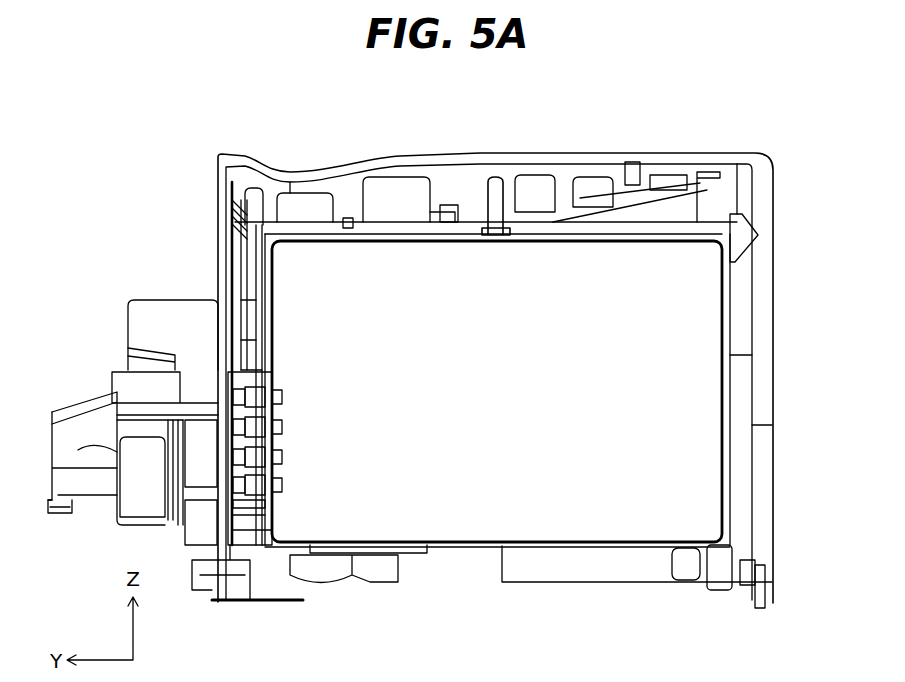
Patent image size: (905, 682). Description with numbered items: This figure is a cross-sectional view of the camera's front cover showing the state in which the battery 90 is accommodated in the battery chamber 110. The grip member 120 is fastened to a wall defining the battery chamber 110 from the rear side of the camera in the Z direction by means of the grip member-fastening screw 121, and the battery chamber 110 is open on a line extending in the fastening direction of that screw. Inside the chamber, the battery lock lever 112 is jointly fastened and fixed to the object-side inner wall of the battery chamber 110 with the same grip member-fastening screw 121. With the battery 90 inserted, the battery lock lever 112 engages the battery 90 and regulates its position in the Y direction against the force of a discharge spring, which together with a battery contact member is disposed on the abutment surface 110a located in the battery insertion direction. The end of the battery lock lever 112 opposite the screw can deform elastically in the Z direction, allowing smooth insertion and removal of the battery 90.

The battery 90 is at (676, 383).
The battery chamber 110 is at (262, 232).
The abutment surface 110a is at (263, 332).
The battery lock lever 112 is at (728, 240).
The grip member 120 is at (567, 175).
The grip member-fastening screw 121 is at (494, 177).